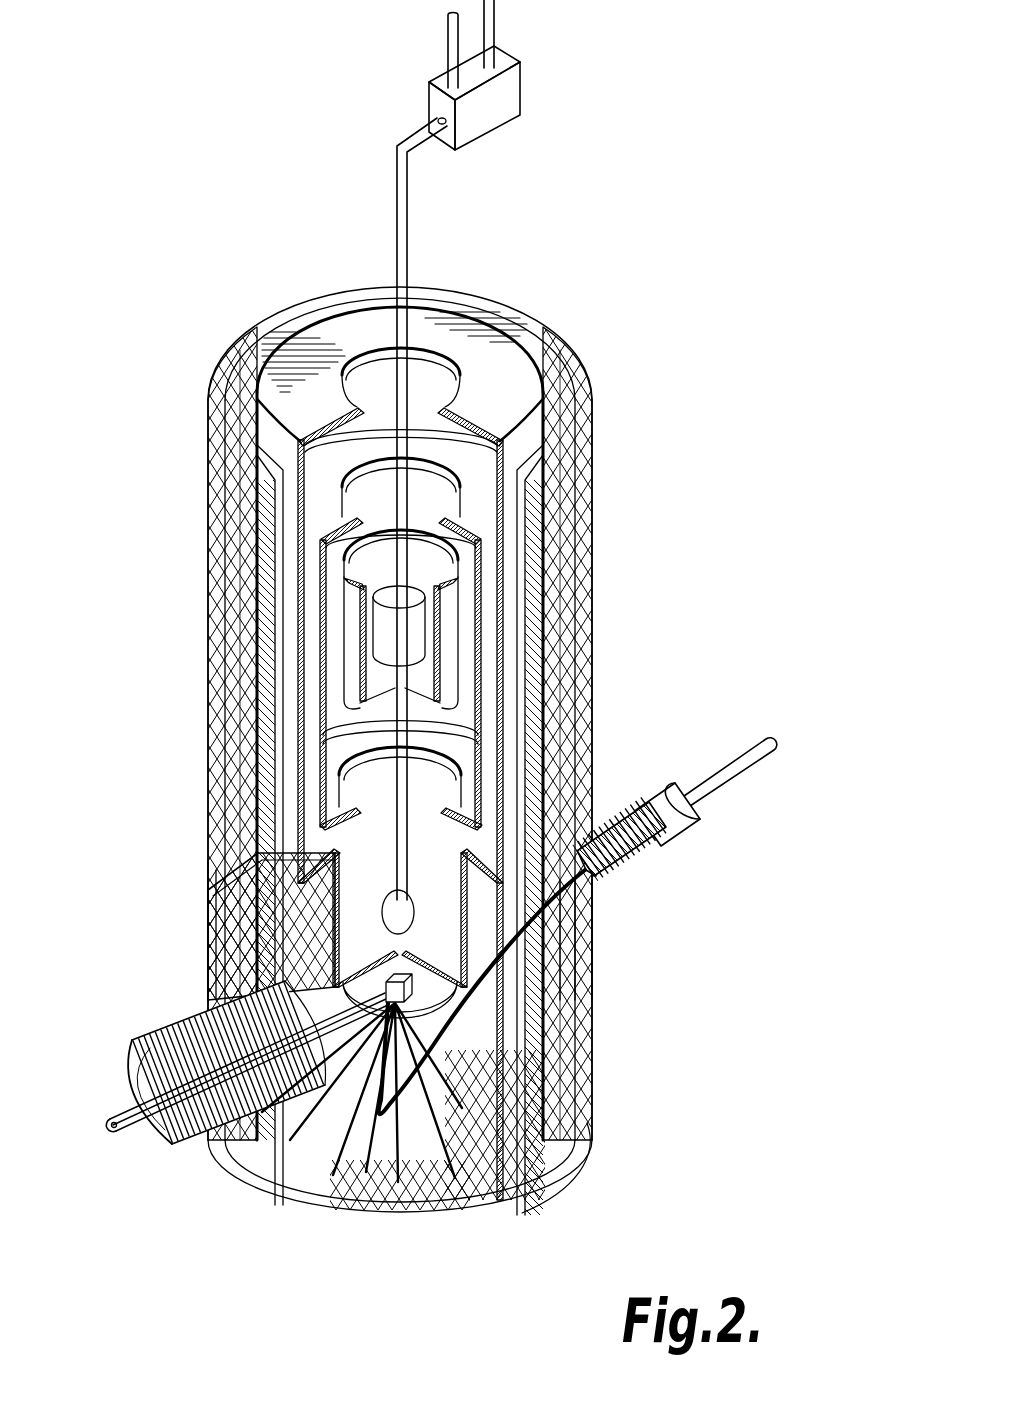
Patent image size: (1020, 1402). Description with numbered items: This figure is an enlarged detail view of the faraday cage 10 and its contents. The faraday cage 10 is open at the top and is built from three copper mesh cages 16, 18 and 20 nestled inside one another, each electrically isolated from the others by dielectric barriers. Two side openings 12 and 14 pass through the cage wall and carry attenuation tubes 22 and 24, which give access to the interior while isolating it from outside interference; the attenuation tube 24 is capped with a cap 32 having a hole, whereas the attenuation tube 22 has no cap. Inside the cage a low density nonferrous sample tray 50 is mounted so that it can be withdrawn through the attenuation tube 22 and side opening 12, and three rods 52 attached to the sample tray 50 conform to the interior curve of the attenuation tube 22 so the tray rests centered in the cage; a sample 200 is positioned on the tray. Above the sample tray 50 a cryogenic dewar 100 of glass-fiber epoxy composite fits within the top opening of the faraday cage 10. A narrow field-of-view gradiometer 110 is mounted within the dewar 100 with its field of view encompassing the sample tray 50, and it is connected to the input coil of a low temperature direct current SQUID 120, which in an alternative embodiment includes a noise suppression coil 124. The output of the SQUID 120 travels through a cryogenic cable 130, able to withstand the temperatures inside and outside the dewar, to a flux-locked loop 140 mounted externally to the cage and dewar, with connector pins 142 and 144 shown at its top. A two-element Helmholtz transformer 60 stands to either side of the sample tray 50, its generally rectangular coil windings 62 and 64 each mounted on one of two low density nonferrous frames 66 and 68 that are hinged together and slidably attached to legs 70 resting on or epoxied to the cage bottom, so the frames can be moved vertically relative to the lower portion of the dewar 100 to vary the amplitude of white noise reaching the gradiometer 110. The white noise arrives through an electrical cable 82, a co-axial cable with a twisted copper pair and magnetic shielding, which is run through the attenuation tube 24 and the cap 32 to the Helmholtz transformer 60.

The faraday cage 10 is at (207, 393).
The side opening 12 is at (183, 1113).
The side opening 14 is at (600, 880).
The copper mesh cage 16 is at (232, 358).
The copper mesh cage 18 is at (274, 328).
The copper mesh cage 20 is at (560, 378).
The attenuation tube 22 is at (165, 1033).
The attenuation tube 24 is at (620, 796).
The cap 32 is at (657, 790).
The sample tray 50 is at (588, 947).
The rods 52 is at (124, 1136).
The Helmholtz transformer 60 is at (590, 967).
The coil winding 62 is at (480, 1027).
The coil winding 64 is at (200, 910).
The frame 66 is at (213, 960).
The frame 68 is at (393, 1115).
The legs 70 is at (327, 1163).
The electrical cable 82 is at (710, 784).
The cryogenic dewar 100 is at (520, 362).
The gradiometer 110 is at (296, 812).
The SQUID 120 is at (450, 668).
The noise suppression coil 124 is at (413, 620).
The cryogenic cable 130 is at (400, 208).
The flux-locked loop 140 is at (505, 95).
The connector pin 142 is at (494, 22).
The connector pin 144 is at (448, 42).
The sample 200 is at (263, 903).